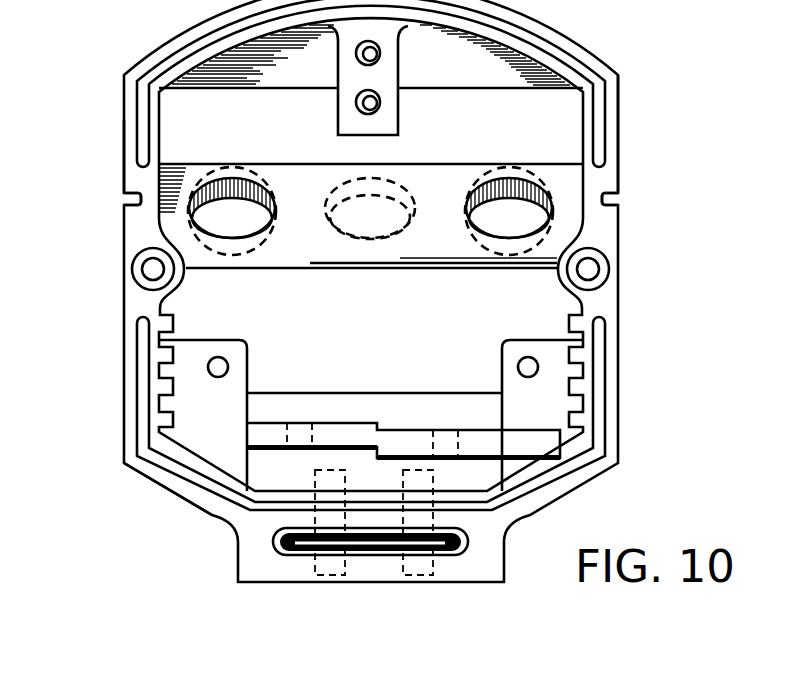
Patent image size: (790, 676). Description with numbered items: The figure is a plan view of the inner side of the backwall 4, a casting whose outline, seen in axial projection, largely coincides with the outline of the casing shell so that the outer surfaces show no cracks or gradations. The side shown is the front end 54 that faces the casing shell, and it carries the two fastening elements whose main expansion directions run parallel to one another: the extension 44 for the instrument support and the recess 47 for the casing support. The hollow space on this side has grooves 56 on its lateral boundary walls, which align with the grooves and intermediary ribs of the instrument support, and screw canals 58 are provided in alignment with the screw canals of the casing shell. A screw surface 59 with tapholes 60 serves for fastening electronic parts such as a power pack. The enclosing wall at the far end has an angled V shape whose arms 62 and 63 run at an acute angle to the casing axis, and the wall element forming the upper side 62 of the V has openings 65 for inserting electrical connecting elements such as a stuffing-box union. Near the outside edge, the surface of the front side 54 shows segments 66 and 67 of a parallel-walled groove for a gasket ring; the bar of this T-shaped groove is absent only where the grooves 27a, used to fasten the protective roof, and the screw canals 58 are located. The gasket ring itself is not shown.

The backwall 4 is at (604, 34).
The grooves 27a is at (624, 199).
The extension 44 is at (473, 445).
The recess 47 is at (377, 556).
The front end 54 is at (131, 181).
The grooves 56 is at (583, 403).
The screw canals 58 is at (590, 268).
The screw surface 59 is at (387, 73).
The tapholes 60 is at (354, 56).
The arm 62 is at (446, 262).
The arm 63 is at (395, 368).
The openings 65 is at (478, 198).
The groove segment 66 is at (600, 132).
The groove segment 67 is at (183, 478).